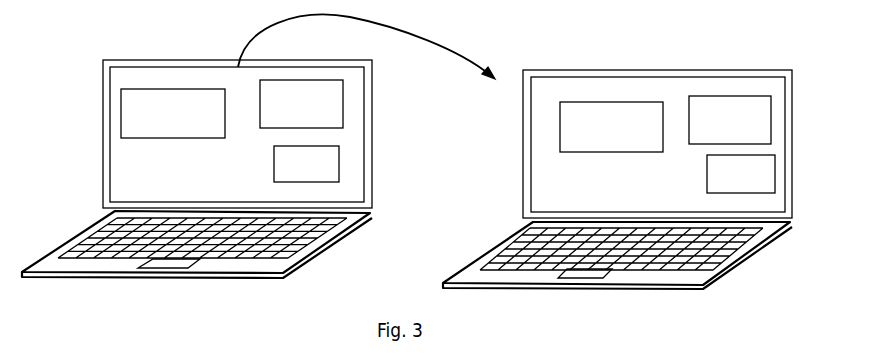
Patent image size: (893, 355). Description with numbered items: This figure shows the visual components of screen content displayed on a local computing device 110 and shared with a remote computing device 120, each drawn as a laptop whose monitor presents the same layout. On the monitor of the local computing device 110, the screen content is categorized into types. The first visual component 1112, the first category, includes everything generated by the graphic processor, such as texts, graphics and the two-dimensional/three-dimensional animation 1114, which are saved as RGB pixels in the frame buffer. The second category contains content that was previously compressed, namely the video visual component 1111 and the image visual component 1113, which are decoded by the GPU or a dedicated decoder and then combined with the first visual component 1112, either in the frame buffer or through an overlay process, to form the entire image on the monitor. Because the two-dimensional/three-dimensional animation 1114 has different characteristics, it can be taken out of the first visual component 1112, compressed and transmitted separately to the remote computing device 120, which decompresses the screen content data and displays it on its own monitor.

The local computing device 110 is at (102, 77).
The video visual component 1111 is at (121, 118).
The first visual component 1112 is at (348, 188).
The image visual component 1113 is at (339, 163).
The 2D/3D animation 1114 is at (343, 103).
The remote computing device 120 is at (612, 70).